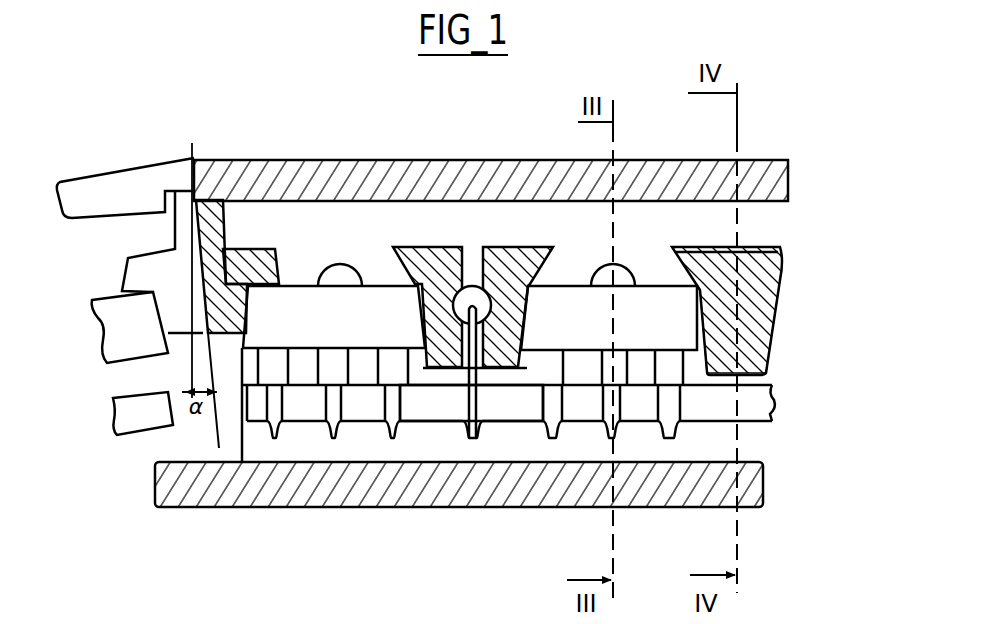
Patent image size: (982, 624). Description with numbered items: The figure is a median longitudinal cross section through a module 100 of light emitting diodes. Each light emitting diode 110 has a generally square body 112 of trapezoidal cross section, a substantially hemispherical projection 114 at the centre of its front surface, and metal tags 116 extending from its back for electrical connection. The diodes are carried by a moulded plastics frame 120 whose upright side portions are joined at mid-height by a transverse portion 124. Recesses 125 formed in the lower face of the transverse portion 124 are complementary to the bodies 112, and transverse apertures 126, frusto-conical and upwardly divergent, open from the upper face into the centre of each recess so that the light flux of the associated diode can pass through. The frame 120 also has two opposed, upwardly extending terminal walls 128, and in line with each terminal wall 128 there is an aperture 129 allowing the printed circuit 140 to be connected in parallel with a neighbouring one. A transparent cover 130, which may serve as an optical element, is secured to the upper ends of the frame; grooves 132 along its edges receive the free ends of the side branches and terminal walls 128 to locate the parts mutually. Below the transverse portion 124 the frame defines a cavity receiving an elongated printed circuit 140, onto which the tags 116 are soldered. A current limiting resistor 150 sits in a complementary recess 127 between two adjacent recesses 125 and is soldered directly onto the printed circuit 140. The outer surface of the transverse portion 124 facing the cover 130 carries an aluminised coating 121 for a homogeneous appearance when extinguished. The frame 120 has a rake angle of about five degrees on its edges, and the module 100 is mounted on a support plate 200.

The module 100 is at (617, 84).
The light emitting diode 110 is at (298, 241).
The body 112 is at (314, 329).
The projection 114 is at (338, 263).
The metal tags 116 is at (394, 423).
The frame 120 is at (789, 325).
The coating 121 is at (770, 246).
The transverse portion 124 is at (762, 297).
The recesses 125 is at (415, 368).
The transverse apertures 126 is at (277, 258).
The complementary recess 127 is at (461, 296).
The terminal walls 128 is at (207, 193).
The aperture 129 is at (220, 430).
The cover 130 is at (452, 180).
The grooves 132 is at (222, 196).
The printed circuit 140 is at (433, 408).
The resistor 150 is at (488, 283).
The support plate 200 is at (668, 488).